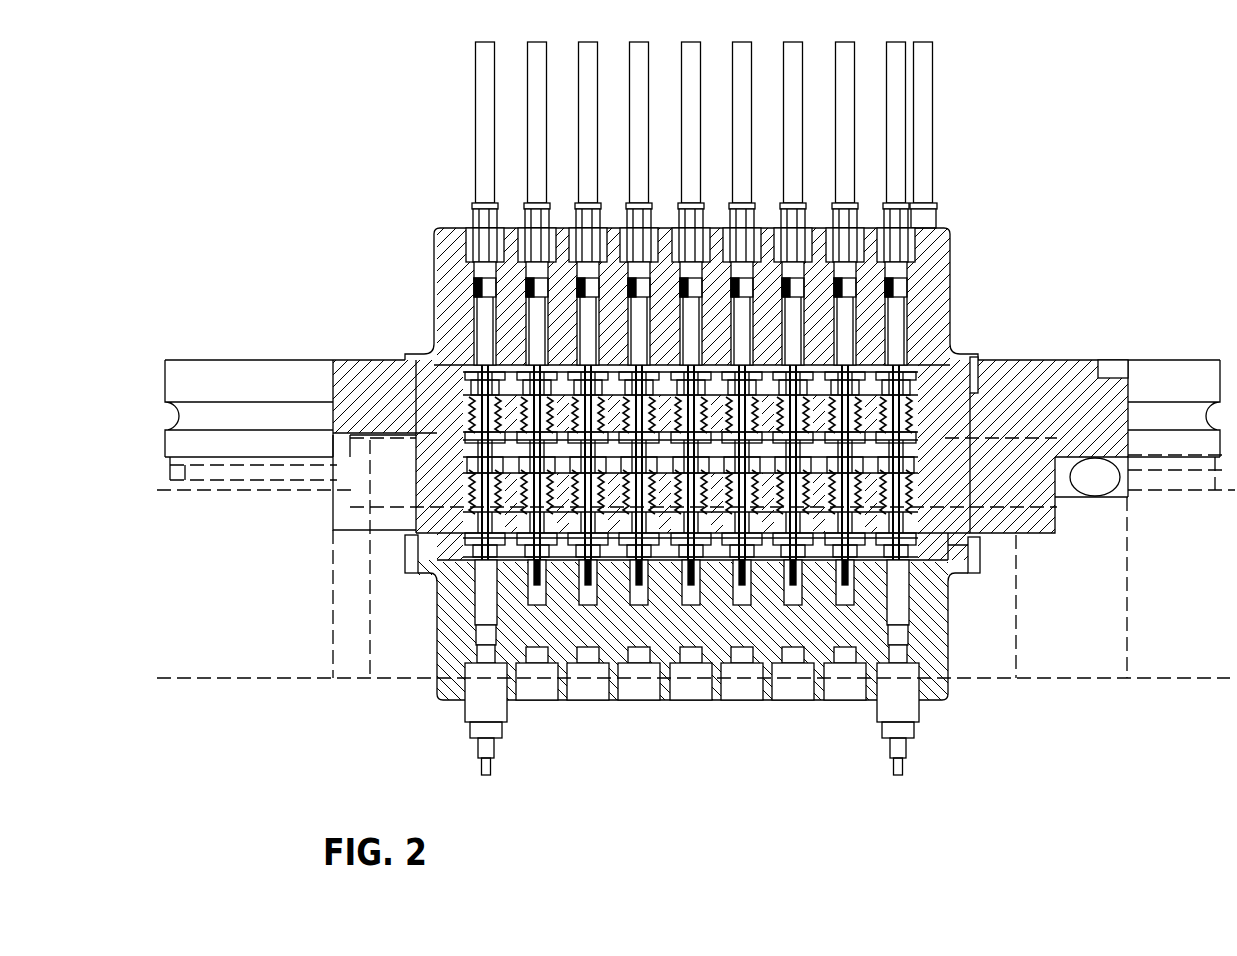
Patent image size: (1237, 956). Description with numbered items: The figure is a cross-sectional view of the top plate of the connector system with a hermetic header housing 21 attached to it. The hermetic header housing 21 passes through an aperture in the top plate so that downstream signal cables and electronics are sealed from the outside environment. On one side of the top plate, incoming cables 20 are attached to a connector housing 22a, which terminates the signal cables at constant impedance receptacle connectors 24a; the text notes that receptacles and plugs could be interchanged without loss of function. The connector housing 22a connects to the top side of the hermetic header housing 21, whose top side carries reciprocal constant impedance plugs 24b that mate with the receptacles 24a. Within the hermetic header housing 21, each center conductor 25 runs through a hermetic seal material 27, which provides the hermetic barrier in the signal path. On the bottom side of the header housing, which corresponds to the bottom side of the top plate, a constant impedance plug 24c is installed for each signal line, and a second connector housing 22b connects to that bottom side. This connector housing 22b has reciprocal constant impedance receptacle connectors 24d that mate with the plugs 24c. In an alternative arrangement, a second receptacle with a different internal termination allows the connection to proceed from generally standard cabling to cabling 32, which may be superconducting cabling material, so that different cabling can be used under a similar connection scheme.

The incoming cables 20 is at (930, 83).
The hermetic header housing 21 is at (378, 375).
The connector housing 22a is at (455, 226).
The connector housing 22b is at (452, 652).
The constant impedance receptacle connector 24a is at (900, 322).
The reciprocal constant impedance plug 24b is at (923, 410).
The constant impedance plug 24c is at (950, 545).
The reciprocal constant impedance receptacle connector 24d is at (903, 615).
The center conductor 25 is at (900, 452).
The hermetic seal material 27 is at (905, 462).
The cabling 32 is at (903, 765).